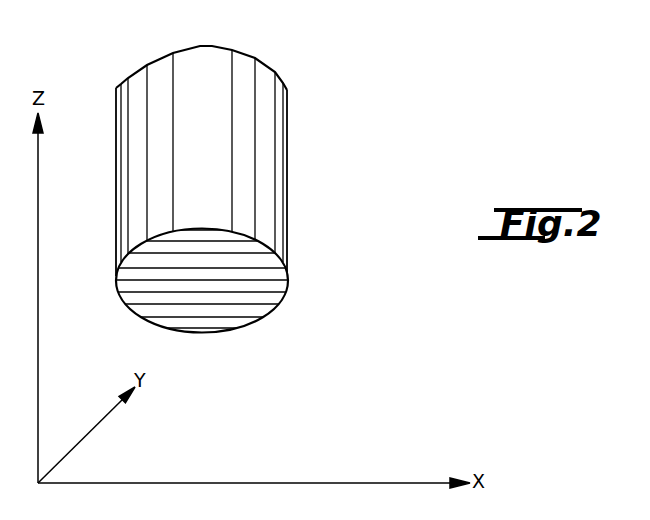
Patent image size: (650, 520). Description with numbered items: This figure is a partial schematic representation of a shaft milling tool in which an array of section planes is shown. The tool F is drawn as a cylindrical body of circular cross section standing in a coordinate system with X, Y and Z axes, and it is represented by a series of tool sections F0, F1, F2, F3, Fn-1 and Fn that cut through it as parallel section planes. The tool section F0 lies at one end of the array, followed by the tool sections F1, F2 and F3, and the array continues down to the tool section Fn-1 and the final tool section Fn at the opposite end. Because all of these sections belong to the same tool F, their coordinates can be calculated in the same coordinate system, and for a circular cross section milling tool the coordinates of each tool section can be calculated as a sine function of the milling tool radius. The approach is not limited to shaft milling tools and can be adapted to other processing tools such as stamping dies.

The tool F is at (296, 130).
The tool section F0 is at (233, 230).
The tool section F1 is at (253, 240).
The tool section F2 is at (275, 255).
The tool section F3 is at (287, 268).
The tool section Fn-1 is at (258, 320).
The tool section Fn is at (235, 328).